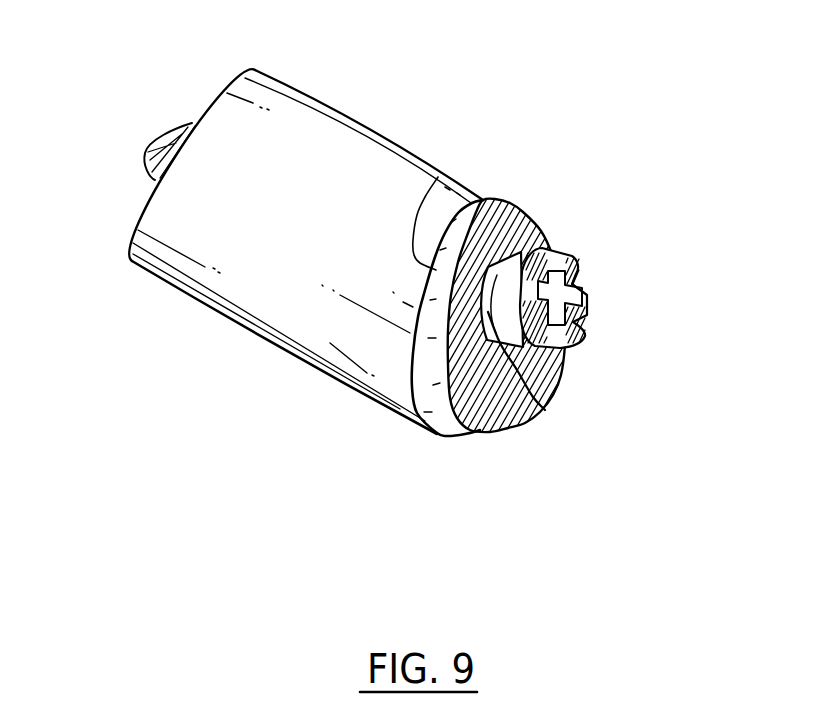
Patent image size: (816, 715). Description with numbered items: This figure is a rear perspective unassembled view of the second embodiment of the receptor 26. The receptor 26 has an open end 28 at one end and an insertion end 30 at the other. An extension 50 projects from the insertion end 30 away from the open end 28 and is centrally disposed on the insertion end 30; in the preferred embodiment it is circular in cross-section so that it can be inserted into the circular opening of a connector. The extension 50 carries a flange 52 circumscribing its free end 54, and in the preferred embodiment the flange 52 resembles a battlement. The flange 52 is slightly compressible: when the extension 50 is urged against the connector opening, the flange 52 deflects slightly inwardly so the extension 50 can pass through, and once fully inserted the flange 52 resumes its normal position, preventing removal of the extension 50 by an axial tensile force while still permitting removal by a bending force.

The receptor 26 is at (253, 385).
The open end 28 is at (242, 125).
The insertion end 30 is at (438, 177).
The extension 50 is at (522, 422).
The flange 52 is at (553, 397).
The free end 54 is at (585, 338).